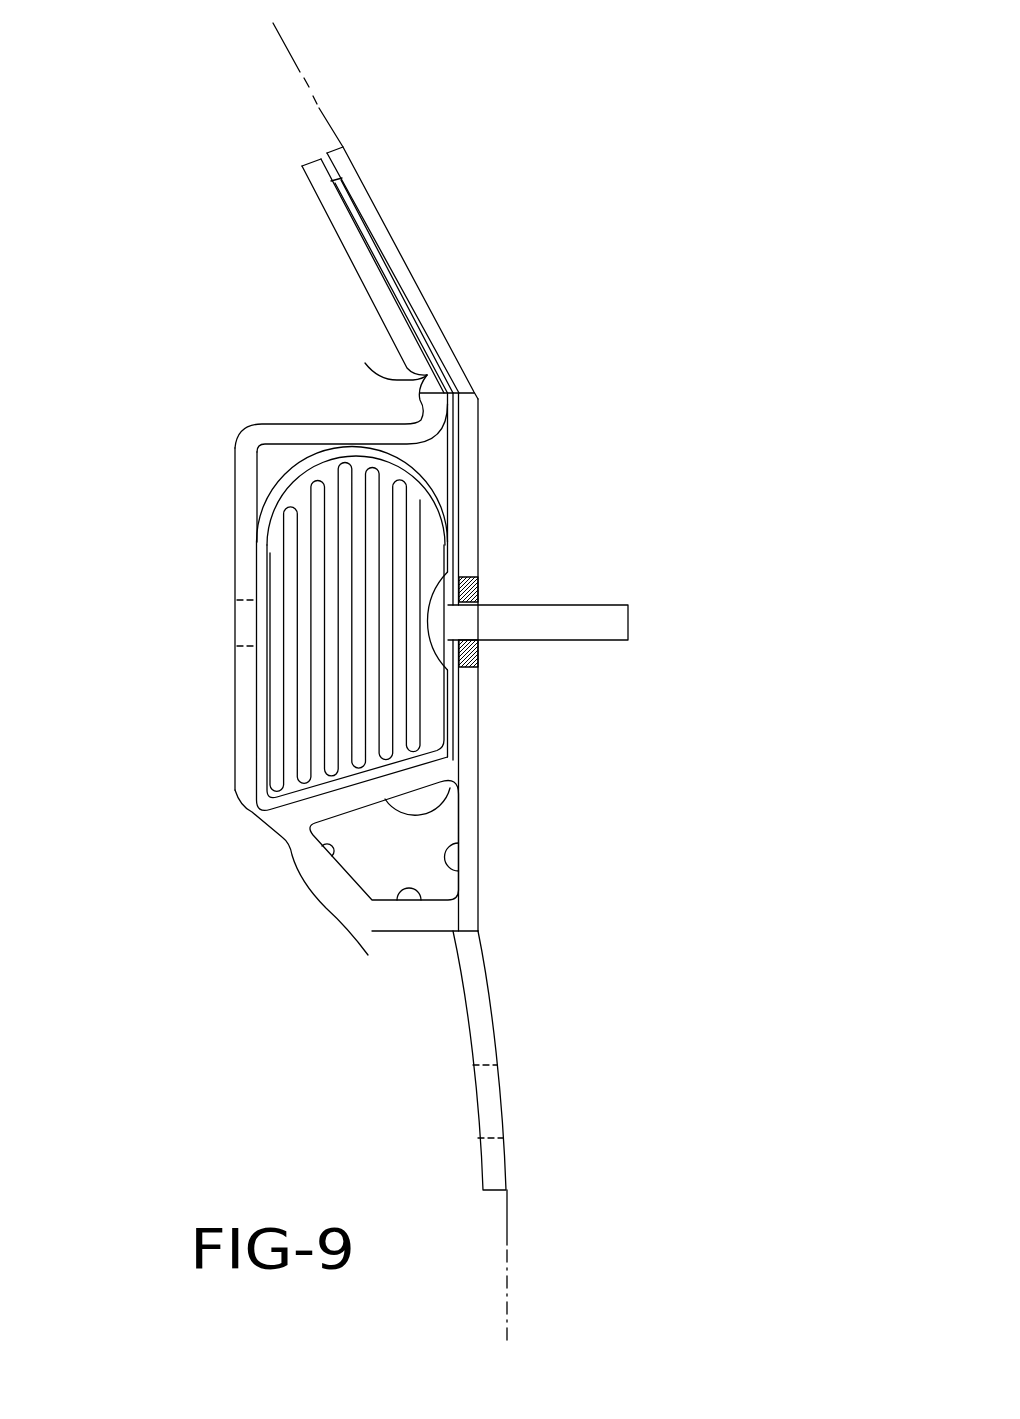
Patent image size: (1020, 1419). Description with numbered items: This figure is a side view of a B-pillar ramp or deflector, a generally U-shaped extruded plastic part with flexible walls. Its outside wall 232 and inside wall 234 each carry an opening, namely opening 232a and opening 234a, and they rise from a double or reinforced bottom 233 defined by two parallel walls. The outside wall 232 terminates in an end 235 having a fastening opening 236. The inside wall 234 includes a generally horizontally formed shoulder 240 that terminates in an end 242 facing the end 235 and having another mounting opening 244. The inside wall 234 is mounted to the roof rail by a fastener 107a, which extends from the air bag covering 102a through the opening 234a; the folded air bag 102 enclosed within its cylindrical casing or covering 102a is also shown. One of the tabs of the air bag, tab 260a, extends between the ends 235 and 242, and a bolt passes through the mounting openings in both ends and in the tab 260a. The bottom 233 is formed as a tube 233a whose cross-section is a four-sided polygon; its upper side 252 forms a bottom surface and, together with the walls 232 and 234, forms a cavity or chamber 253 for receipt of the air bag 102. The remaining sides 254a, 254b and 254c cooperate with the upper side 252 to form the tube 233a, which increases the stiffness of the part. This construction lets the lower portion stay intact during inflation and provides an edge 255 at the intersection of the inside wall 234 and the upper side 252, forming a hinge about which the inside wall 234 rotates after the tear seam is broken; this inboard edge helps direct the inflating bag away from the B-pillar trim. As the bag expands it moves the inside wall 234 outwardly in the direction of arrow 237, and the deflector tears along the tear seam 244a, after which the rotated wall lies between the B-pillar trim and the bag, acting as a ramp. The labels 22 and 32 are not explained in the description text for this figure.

The electrical assembly 22 is at (395, 118).
The rotational axis / pivot line 32 is at (535, 1228).
The air bag 102 is at (420, 557).
The air bag covering 102a is at (452, 695).
The fastener 107a is at (512, 610).
The outside wall 232 is at (480, 462).
The opening 232a is at (466, 641).
The bottom 233 is at (430, 843).
The tube 233a is at (370, 857).
The inside wall 234 is at (233, 497).
The opening 234a is at (255, 600).
The end 235 is at (360, 198).
The fastening opening 236 is at (382, 238).
The arrow 237 is at (215, 718).
The shoulder 240 is at (327, 422).
The end 242 is at (318, 201).
The mounting opening 244 is at (352, 243).
The tear seam 244a is at (365, 363).
The upper side 252 is at (463, 795).
The chamber 253 is at (277, 460).
The side 254a is at (328, 862).
The side 254b is at (393, 897).
The side 254c is at (460, 874).
The edge 255 is at (268, 830).
The tab 260a is at (398, 292).